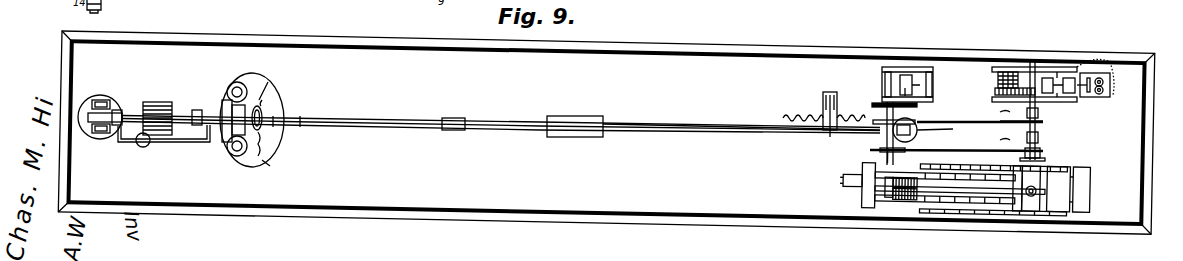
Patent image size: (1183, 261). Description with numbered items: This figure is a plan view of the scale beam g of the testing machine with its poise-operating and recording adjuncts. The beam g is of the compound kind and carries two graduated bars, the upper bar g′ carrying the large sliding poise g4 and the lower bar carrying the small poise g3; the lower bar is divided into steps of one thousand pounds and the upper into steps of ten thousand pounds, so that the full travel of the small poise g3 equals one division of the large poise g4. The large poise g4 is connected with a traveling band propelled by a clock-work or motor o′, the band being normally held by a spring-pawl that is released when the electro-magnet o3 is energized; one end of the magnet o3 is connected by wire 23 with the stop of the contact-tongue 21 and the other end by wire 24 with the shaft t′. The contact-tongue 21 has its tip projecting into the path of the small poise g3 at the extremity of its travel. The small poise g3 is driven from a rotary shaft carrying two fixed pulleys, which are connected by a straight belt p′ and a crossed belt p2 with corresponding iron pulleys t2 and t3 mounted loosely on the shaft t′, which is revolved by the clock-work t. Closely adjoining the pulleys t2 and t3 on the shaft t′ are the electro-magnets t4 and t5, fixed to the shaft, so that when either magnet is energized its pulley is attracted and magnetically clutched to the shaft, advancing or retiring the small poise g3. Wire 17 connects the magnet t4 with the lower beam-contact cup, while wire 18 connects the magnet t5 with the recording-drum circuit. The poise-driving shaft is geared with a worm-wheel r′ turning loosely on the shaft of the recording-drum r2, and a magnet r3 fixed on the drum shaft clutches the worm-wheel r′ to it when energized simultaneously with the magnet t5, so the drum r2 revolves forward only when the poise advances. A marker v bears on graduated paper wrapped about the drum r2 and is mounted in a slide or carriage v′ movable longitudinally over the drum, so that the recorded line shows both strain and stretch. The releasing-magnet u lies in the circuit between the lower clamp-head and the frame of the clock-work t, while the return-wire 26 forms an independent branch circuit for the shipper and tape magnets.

The beam g is at (568, 135).
The small poise g3 is at (453, 135).
The large poise g4 is at (575, 137).
The graduated bar g′ is at (741, 141).
The electro-magnet o3 is at (262, 110).
The wire 23 is at (562, 95).
The wire 24 is at (268, 155).
The contact-tongue 21 is at (828, 135).
The clock-work o′ is at (915, 84).
The straight belt p′ is at (980, 113).
The crossed belt p2 is at (956, 143).
The wire 17 is at (996, 112).
The wire 18 is at (996, 140).
The clock-work t is at (1028, 84).
The rotary shaft t′ is at (1032, 100).
The pulley t2 is at (1040, 120).
The pulley t3 is at (1042, 153).
The electro-magnet t4 is at (1040, 113).
The electro-magnet t5 is at (1040, 137).
The releasing-magnet u is at (1113, 73).
The return-wire 26 is at (860, 191).
The worm-wheel r′ is at (888, 195).
The magnet r3 is at (906, 202).
The recording-drum r2 is at (950, 203).
The slide v′ is at (1040, 210).
The marker v is at (1074, 189).